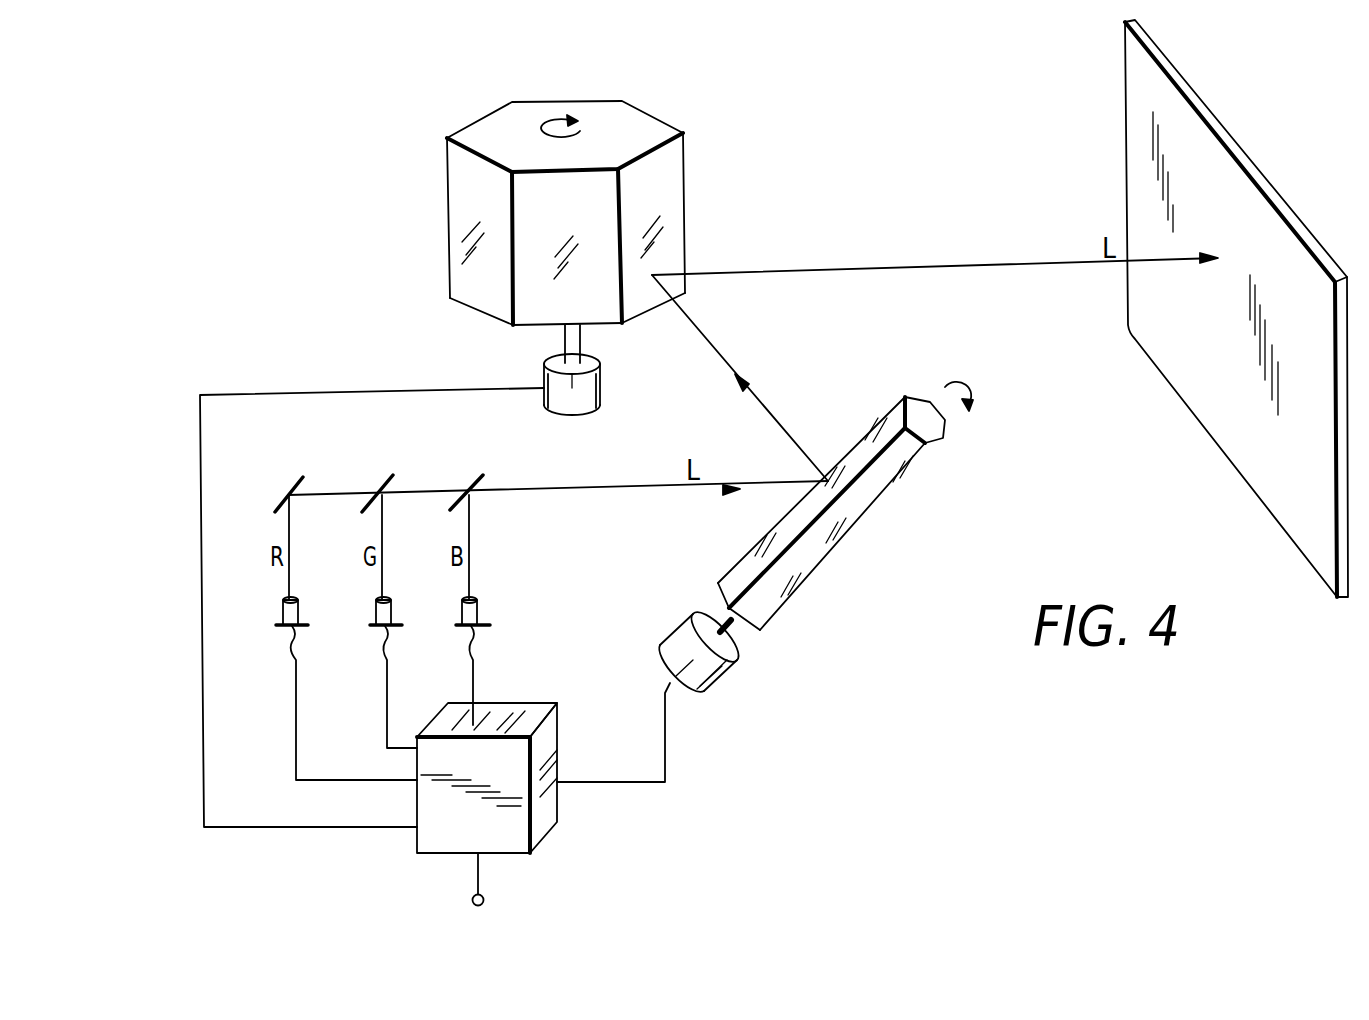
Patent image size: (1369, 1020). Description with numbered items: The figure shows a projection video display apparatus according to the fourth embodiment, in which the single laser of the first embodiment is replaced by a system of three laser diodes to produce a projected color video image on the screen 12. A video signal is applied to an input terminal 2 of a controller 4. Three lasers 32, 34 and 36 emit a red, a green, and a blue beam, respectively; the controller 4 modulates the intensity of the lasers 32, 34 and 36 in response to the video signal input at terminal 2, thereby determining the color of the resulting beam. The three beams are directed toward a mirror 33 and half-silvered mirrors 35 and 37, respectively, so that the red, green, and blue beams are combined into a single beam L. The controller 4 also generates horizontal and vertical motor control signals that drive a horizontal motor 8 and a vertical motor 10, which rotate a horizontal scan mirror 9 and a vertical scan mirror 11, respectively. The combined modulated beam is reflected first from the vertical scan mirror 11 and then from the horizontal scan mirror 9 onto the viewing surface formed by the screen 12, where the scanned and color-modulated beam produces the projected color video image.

The input terminal 2 is at (484, 900).
The controller 4 is at (557, 822).
The horizontal motor 8 is at (600, 392).
The horizontal scan mirror 9 is at (652, 113).
The vertical motor 10 is at (733, 669).
The vertical scan mirror 11 is at (942, 428).
The screen 12 is at (1352, 605).
The laser 32 is at (282, 607).
The mirror 33 is at (280, 476).
The laser 34 is at (375, 625).
The half-silvered mirror 35 is at (378, 483).
The laser 36 is at (464, 625).
The half-silvered mirror 37 is at (477, 478).